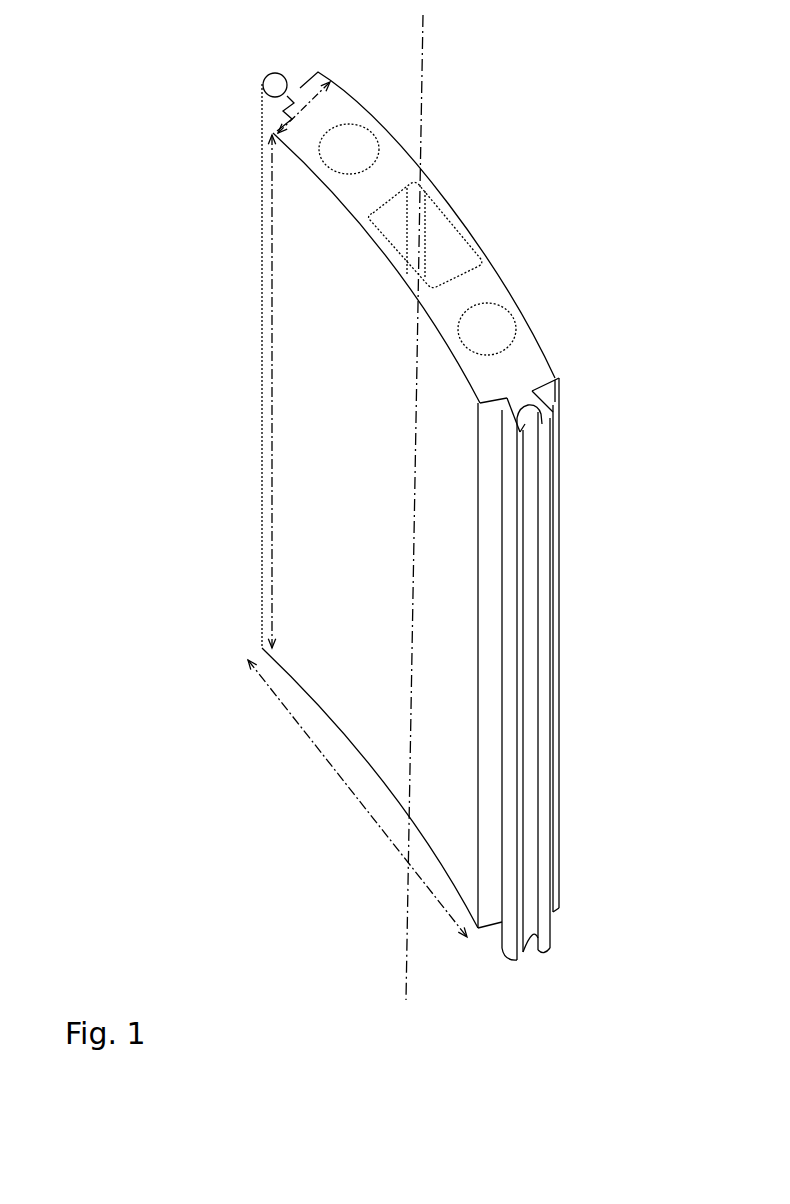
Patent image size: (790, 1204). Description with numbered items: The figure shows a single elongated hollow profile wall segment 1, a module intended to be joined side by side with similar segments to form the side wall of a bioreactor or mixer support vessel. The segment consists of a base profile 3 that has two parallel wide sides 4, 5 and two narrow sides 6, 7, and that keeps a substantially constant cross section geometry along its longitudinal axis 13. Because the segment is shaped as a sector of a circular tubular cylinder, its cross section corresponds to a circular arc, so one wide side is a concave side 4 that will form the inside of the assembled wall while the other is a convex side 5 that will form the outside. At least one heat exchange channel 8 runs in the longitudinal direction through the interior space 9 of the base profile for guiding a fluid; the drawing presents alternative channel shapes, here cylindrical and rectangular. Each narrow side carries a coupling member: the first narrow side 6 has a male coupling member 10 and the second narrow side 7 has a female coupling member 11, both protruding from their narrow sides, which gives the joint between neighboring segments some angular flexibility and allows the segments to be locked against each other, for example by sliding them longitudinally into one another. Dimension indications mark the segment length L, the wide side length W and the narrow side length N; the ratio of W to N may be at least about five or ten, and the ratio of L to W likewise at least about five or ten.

The elongated hollow profile wall segment 1 is at (130, 482).
The base profile 3 is at (395, 135).
The wide side (concave side) 4 is at (345, 198).
The wide side (convex side) 5 is at (420, 164).
The first narrow side 6 is at (320, 75).
The second narrow side 7 is at (555, 380).
The heat exchange channel 8 is at (485, 330).
The interior space 9 is at (487, 271).
The male coupling member 10 is at (263, 80).
The female coupling member 11 is at (560, 406).
The longitudinal axis 13 is at (406, 905).
The segment length L is at (270, 360).
The narrow side length N is at (280, 110).
The wide side length W is at (327, 763).